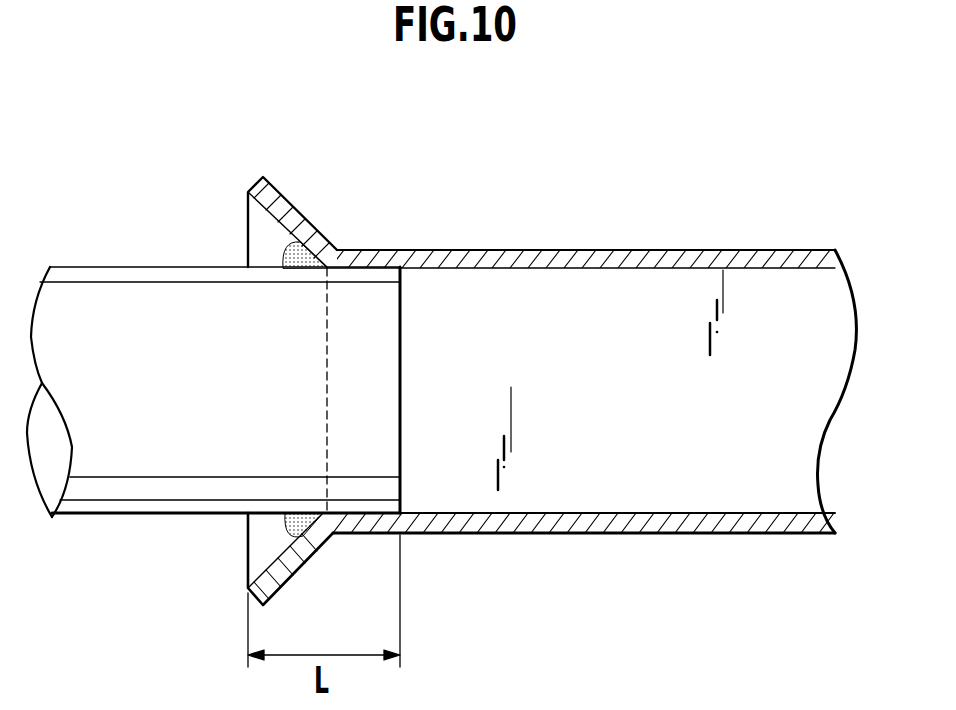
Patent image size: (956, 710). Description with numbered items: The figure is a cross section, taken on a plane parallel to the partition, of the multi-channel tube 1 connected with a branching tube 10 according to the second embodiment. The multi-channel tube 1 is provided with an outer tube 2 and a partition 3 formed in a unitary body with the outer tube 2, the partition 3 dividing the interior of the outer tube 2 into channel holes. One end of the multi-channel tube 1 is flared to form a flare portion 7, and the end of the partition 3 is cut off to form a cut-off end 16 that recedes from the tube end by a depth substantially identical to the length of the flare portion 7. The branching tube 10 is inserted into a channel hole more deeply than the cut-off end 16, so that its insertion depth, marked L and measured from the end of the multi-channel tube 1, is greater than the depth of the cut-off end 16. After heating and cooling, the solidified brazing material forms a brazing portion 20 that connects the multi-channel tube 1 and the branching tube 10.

The multi-channel tube 1 is at (615, 250).
The outer tube 2 is at (563, 525).
The partition 3 is at (808, 416).
The flare portion 7 is at (283, 193).
The branching tube 10 is at (115, 497).
The cut-off end 16 is at (325, 373).
The brazing portion 20 is at (322, 236).